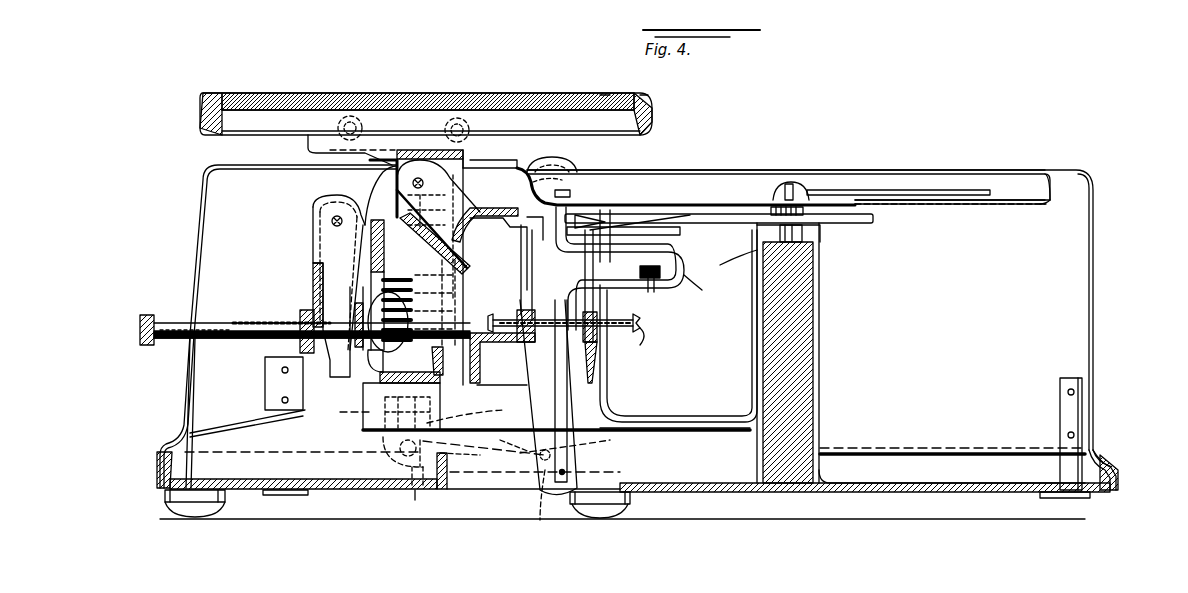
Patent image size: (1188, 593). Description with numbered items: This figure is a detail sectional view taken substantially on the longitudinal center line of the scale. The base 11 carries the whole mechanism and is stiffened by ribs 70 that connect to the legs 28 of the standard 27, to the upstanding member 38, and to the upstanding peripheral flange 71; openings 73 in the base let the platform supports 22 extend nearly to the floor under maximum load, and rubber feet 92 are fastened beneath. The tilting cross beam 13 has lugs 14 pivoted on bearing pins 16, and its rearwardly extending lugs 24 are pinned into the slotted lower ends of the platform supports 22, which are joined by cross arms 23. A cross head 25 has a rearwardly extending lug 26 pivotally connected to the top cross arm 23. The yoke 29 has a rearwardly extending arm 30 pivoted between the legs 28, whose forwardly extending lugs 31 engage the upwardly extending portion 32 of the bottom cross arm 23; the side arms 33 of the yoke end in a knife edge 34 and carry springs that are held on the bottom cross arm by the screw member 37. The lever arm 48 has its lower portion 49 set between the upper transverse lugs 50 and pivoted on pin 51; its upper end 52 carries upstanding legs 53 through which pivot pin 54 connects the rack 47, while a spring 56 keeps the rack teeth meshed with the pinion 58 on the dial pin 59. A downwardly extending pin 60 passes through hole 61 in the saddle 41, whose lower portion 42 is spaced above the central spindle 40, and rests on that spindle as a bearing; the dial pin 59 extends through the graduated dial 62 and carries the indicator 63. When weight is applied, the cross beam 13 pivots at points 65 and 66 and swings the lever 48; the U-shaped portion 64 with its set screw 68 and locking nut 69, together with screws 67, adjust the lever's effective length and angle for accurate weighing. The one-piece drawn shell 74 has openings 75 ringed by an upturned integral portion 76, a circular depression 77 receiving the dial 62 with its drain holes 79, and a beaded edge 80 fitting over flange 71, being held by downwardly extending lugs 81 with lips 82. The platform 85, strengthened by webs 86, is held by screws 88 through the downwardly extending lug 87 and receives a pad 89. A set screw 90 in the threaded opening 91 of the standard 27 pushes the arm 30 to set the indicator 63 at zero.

The base 11 is at (415, 490).
The cross beam 13 is at (610, 365).
The lugs 14 is at (612, 440).
The bearing pins 16 is at (440, 448).
The platform supports 22 is at (455, 288).
The cross arms 23 is at (468, 248).
The rearwardly extending lugs 24 is at (415, 500).
The cross head 25 is at (535, 245).
The rearwardly extending lug 26 is at (450, 152).
The standard 27 is at (300, 395).
The upwardly inclined legs 28 is at (313, 250).
The yoke 29 is at (372, 185).
The rearwardly extending arm 30 is at (313, 207).
The forwardly extending lugs 31 is at (368, 385).
The upwardly extending portion 32 is at (385, 388).
The side arms 33 is at (478, 222).
The knife edge 34 is at (463, 197).
The screw member 37 is at (490, 410).
The upstanding member 38 is at (822, 440).
The central spindle 40 is at (820, 298).
The saddle 41 is at (822, 240).
The lower portion 42 is at (757, 232).
The rack 47 is at (875, 222).
The lever arm 48 is at (610, 405).
The lower portion 49 is at (560, 352).
The upper transverse lugs 50 is at (525, 310).
The pin 51 is at (580, 475).
The upper end 52 is at (640, 238).
The upstanding legs 53 is at (585, 218).
The pivot pin 54 is at (640, 190).
The spring 56 is at (700, 190).
The pinion 58 is at (845, 192).
The dial pin 59 is at (795, 182).
The downwardly extending pin 60 is at (815, 252).
The hole 61 is at (736, 261).
The graduated dial 62 is at (945, 200).
The indicator 63 is at (745, 180).
The U-shaped portion 64 is at (690, 285).
The pivot point 65 is at (440, 490).
The pivot point 66 is at (540, 455).
The screws 67 is at (490, 322).
The set screw 68 is at (655, 270).
The nut 69 is at (662, 258).
The ribs 70 is at (240, 430).
The upstanding peripheral flange 71 is at (1115, 462).
The openings 73 is at (487, 492).
The one-piece drawn shell 74 is at (1090, 237).
The openings 75 is at (470, 158).
The upturned integral portion 76 is at (403, 150).
The circular depression 77 is at (1028, 195).
The holes 79 is at (870, 205).
The beaded edge 80 is at (165, 450).
The downwardly extending lugs 81 is at (192, 385).
The lip 82 is at (290, 495).
The platform 85 is at (650, 110).
The webs 86 is at (275, 135).
The downwardly extending lug 87 is at (530, 112).
The screws 88 is at (345, 115).
The pad 89 is at (588, 95).
The set screw 90 is at (225, 325).
The threaded opening 91 is at (302, 318).
The rubber feet 92 is at (230, 508).